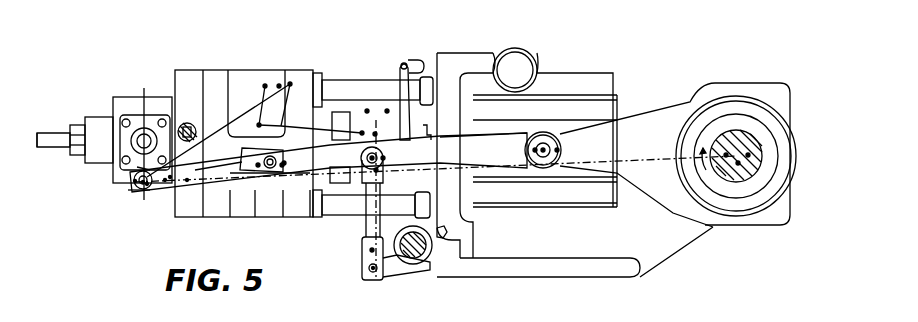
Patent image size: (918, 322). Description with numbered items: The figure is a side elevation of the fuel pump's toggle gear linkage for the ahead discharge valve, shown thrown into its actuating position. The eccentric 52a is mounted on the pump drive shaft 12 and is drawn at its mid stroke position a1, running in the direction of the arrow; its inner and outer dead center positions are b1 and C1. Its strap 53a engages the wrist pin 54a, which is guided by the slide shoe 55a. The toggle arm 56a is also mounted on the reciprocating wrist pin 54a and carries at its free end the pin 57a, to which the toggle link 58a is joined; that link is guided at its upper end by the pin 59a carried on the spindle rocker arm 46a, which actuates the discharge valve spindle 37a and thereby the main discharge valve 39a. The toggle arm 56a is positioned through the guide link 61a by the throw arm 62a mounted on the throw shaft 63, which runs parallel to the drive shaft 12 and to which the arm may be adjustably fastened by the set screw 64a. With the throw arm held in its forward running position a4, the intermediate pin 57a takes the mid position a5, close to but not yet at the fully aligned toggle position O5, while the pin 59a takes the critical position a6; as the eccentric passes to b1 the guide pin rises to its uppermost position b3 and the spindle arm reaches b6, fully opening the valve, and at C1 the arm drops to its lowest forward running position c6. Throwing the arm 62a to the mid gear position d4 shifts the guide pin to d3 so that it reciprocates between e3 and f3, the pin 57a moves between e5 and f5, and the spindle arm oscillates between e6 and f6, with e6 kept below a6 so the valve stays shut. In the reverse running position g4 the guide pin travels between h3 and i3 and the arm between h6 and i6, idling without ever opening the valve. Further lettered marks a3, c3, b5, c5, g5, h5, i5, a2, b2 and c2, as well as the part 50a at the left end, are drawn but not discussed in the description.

The valve stem 50a is at (38, 140).
The discharge valve spindle 37a is at (143, 148).
The main discharge valve 39a is at (272, 87).
The spindle rocker arm 46a is at (137, 167).
The pin 59a is at (128, 190).
The toggle link 58a is at (237, 215).
The pin 57a is at (270, 171).
The guide link 61a is at (373, 220).
The reverse running position g4 is at (366, 247).
The mid gear position d4 is at (372, 250).
The forward running position a4 is at (372, 270).
The throw arm 62a is at (387, 277).
The throw shaft 63 is at (416, 254).
The set screw 64a is at (444, 234).
The toggle arm 56a is at (498, 160).
The wrist pin 54a is at (548, 168).
The slide shoe 55a is at (602, 202).
The strap 53a is at (662, 183).
The eccentric 52a is at (735, 207).
The pump drive shaft 12 is at (766, 150).
The position e5 is at (232, 65).
The point h5 is at (265, 86).
The point g5 is at (279, 86).
The position f5 is at (367, 111).
The point i5 is at (290, 84).
The limit e3 is at (362, 133).
The mid position d3 is at (375, 134).
The limit h3 is at (387, 111).
The limit f3 is at (375, 134).
The limit i3 is at (383, 134).
The point c5 is at (285, 163).
The uppermost position b3 is at (362, 158).
The point c3 is at (384, 158).
The point a3 is at (376, 163).
The point b5 is at (258, 166).
The fully aligned toggle position O5 is at (270, 168).
The mid position a5 is at (282, 166).
The uppermost position b6 is at (134, 181).
The critical position a6 is at (143, 182).
The limit e6 is at (146, 184).
The lowest forward running position c6 is at (153, 186).
The limit f6 is at (165, 181).
The limit h6 is at (170, 178).
The limit i6 is at (187, 181).
The point b2 is at (535, 150).
The pivot a2 is at (582, 123).
The point c2 is at (558, 150).
The inner dead center position b1 is at (726, 157).
The mid stroke position a1 is at (738, 165).
The outer dead center position C1 is at (750, 157).